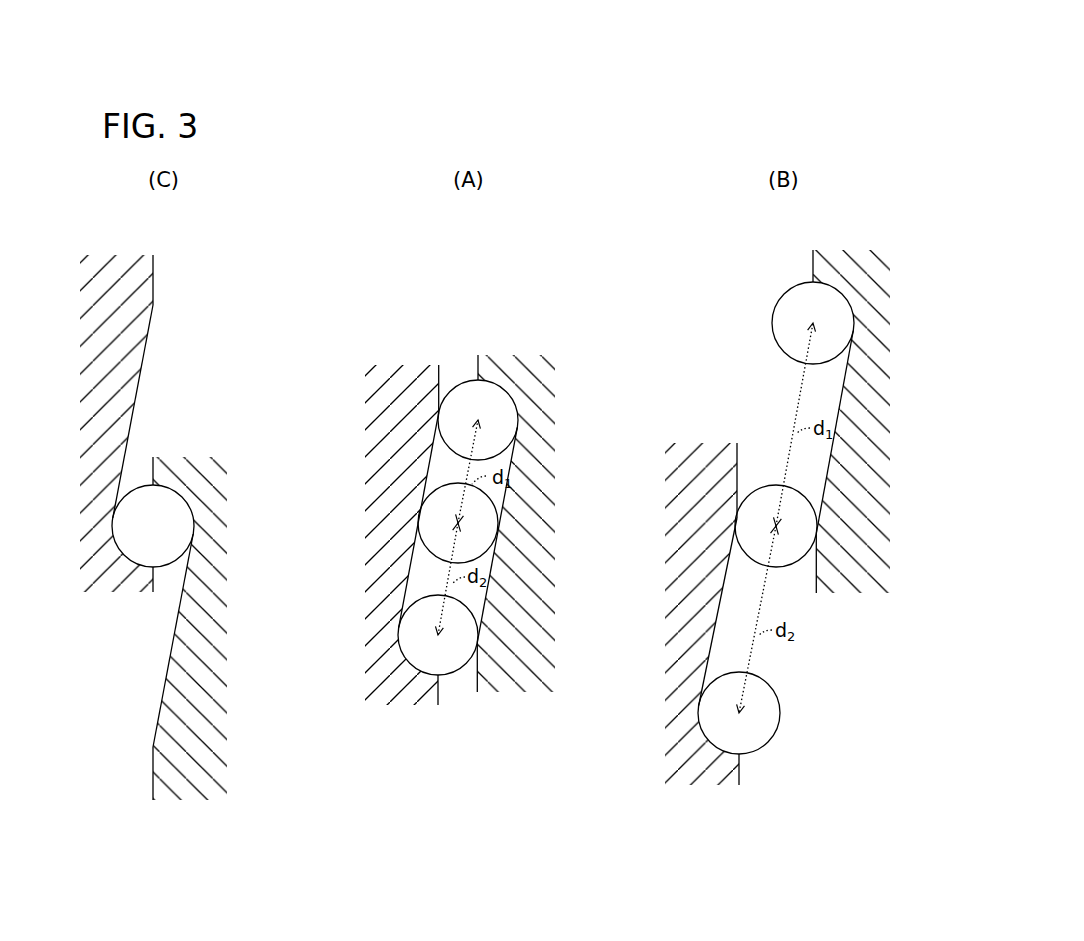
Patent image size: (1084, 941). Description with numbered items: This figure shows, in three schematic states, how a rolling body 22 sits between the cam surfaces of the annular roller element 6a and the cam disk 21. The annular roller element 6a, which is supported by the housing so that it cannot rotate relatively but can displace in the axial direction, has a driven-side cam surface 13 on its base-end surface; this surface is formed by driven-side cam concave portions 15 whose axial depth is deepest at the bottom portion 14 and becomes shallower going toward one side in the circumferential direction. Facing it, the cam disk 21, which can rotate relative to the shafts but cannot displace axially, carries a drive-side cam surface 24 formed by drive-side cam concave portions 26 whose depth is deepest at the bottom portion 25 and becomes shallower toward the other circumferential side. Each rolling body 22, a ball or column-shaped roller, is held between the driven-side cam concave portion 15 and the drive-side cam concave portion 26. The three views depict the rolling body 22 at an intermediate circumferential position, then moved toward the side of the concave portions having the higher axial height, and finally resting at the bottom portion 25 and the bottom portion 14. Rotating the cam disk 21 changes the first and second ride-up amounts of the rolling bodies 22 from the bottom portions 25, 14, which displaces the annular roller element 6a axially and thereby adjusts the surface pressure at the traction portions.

The annular roller element 6a is at (105, 606).
The cam disk 21 is at (198, 444).
The rolling body 22 is at (185, 548).
The driven-side cam surface 13 is at (134, 442).
The bottom portion 14 is at (124, 536).
The driven-side cam concave portion 15 is at (138, 406).
The drive-side cam surface 24 is at (174, 612).
The bottom portion 25 is at (190, 513).
The drive-side cam concave portion 26 is at (167, 656).